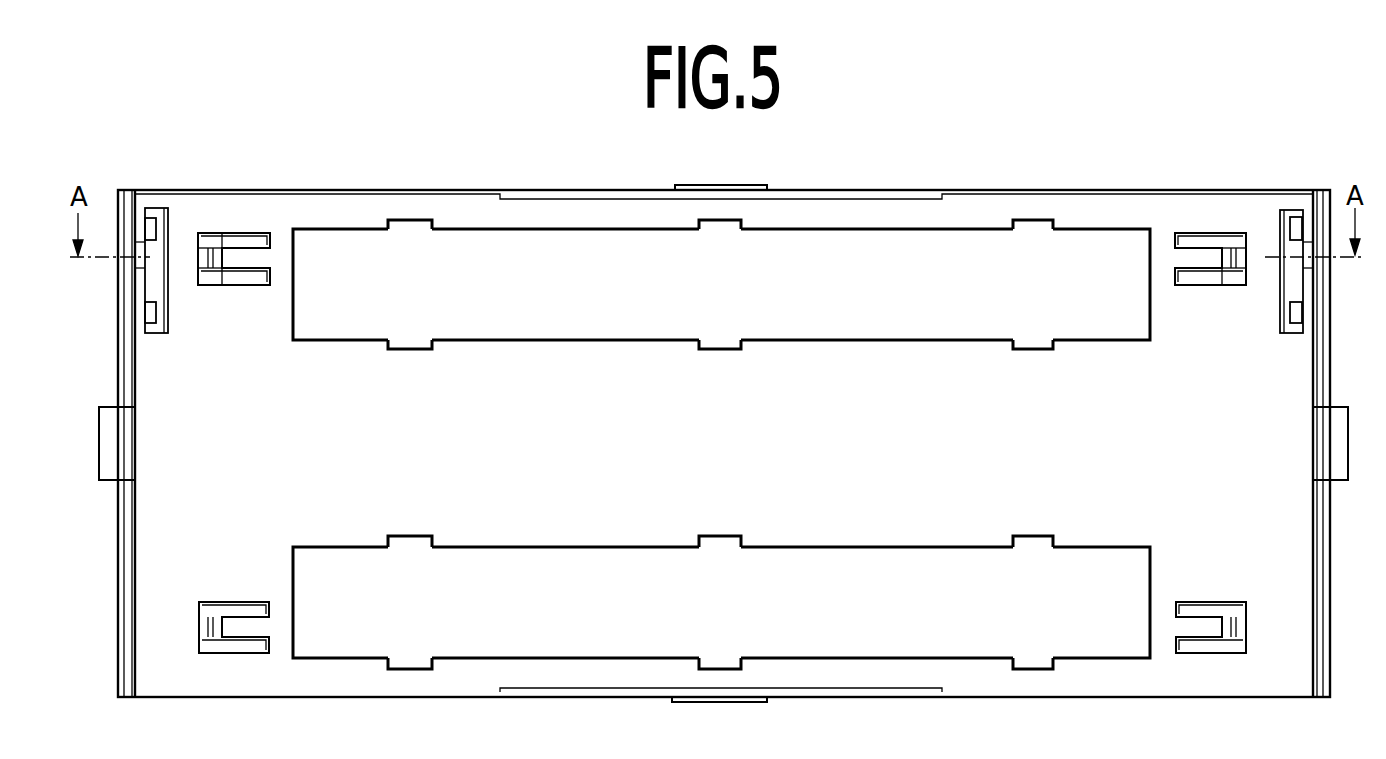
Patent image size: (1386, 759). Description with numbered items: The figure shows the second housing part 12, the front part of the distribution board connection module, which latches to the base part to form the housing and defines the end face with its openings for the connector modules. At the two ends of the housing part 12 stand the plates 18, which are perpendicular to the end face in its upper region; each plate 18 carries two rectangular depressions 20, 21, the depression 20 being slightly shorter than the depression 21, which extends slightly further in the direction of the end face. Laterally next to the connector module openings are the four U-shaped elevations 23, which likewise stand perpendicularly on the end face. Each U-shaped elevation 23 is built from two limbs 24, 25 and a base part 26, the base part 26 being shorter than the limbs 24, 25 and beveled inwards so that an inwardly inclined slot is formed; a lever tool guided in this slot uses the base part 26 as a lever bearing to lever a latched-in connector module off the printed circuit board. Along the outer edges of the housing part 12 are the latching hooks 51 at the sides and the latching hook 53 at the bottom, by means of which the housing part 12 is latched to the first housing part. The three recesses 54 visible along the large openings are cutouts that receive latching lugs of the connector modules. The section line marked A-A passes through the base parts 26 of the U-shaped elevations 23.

The second housing part 12 is at (980, 178).
The plate 18 is at (161, 247).
The depression 20 is at (148, 226).
The depression 21 is at (150, 311).
The U-shaped elevation 23 is at (217, 215).
The limb 24 is at (235, 275).
The limb 25 is at (258, 238).
The base part 26 is at (208, 258).
The latching hook 51 is at (110, 444).
The latching hook 53 is at (693, 702).
The recess 54 is at (412, 228).